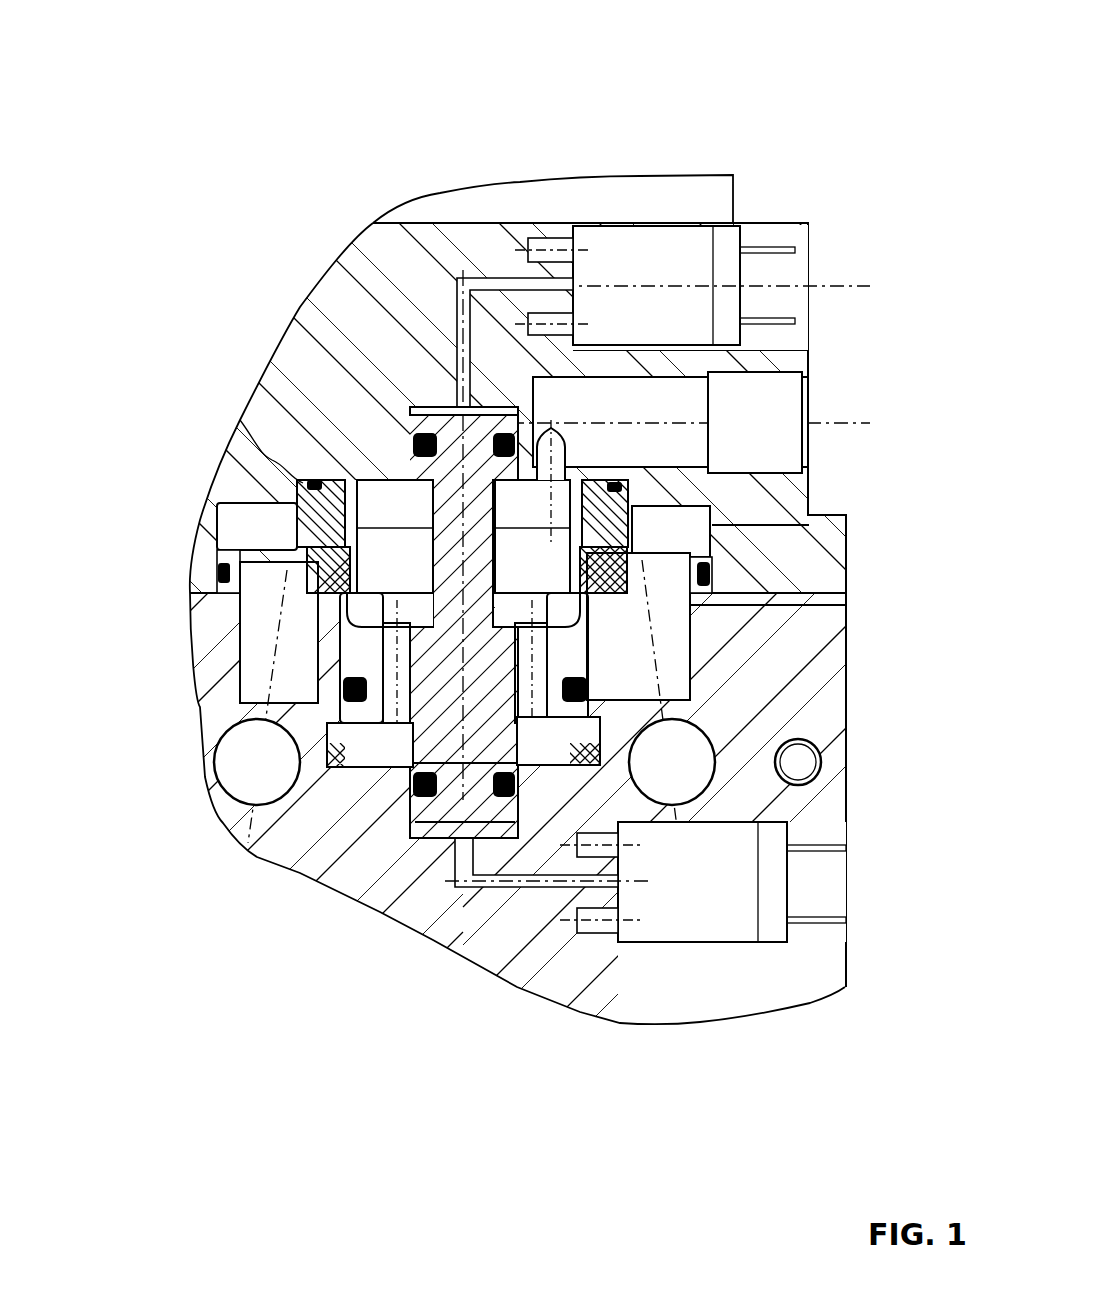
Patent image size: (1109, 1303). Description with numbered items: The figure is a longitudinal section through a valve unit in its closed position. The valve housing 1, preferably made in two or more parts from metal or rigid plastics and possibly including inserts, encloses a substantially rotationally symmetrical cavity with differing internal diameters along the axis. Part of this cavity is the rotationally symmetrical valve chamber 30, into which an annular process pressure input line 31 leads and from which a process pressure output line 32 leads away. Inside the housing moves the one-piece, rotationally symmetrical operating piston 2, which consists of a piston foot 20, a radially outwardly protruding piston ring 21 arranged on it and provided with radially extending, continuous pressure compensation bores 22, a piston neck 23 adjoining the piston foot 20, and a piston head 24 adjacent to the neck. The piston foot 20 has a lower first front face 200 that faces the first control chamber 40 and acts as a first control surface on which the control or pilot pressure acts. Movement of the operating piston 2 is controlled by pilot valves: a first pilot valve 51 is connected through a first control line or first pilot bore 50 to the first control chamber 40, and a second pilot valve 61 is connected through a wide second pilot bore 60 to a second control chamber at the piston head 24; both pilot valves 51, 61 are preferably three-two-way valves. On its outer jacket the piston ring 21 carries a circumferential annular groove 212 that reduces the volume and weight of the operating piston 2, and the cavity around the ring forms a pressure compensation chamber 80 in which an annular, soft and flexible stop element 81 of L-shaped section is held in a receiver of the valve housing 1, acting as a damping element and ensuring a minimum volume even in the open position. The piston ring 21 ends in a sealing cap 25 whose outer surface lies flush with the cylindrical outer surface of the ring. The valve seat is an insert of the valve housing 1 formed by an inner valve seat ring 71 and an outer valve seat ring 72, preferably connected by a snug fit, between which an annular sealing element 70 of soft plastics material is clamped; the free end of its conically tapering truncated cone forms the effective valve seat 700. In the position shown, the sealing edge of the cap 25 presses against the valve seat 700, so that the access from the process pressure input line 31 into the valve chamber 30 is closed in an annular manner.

The valve housing 1 is at (291, 284).
The operating piston 2 is at (435, 437).
The piston foot 20 is at (483, 702).
The piston ring 21 is at (368, 705).
The pressure compensation bores 22 is at (400, 700).
The piston neck 23 is at (478, 516).
The piston head 24 is at (533, 408).
The sealing cap 25 is at (337, 600).
The valve chamber 30 is at (404, 581).
The process pressure input line 31 is at (277, 678).
The process pressure output line 32 is at (790, 395).
The first control chamber 40 is at (447, 833).
The first pilot bore 50 is at (513, 887).
The first pilot valve 51 is at (715, 915).
The second pilot bore 60 is at (500, 278).
The second pilot valve 61 is at (650, 300).
The annular sealing element 70 is at (328, 547).
The inner valve seat ring 71 is at (313, 478).
The outer valve seat ring 72 is at (327, 593).
The pressure compensation chamber 80 is at (543, 750).
The annular stop element 81 is at (690, 585).
The first front face 200 is at (395, 755).
The annular groove 212 is at (337, 643).
The valve seat 700 is at (650, 600).